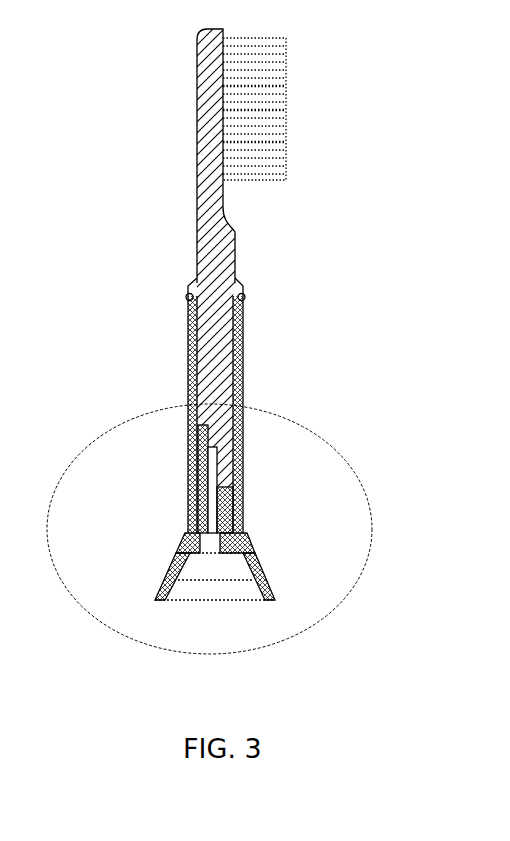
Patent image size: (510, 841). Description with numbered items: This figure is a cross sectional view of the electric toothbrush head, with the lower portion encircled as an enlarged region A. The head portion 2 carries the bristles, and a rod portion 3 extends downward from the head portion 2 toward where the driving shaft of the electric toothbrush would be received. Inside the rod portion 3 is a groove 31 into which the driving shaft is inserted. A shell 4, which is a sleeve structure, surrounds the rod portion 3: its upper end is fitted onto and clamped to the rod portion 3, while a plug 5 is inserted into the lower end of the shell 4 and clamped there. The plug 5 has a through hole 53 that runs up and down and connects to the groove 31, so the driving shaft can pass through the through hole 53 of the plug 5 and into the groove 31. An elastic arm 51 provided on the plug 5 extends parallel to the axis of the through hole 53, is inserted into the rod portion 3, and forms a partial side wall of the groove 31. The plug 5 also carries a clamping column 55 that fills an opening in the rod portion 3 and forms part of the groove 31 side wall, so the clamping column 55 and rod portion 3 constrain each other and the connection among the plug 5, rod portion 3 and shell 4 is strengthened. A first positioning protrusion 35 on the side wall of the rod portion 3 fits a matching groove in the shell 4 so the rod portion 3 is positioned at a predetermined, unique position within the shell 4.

The head portion 2 is at (205, 102).
The rod portion 3 is at (225, 340).
The first positioning protrusion 35 is at (190, 313).
The groove 31 is at (213, 468).
The elastic arm 51 is at (203, 468).
The clamping column 55 is at (228, 505).
The shell 4 is at (180, 552).
The plug 5 is at (192, 600).
The through hole 53 is at (222, 565).
The enlarged region A is at (330, 445).